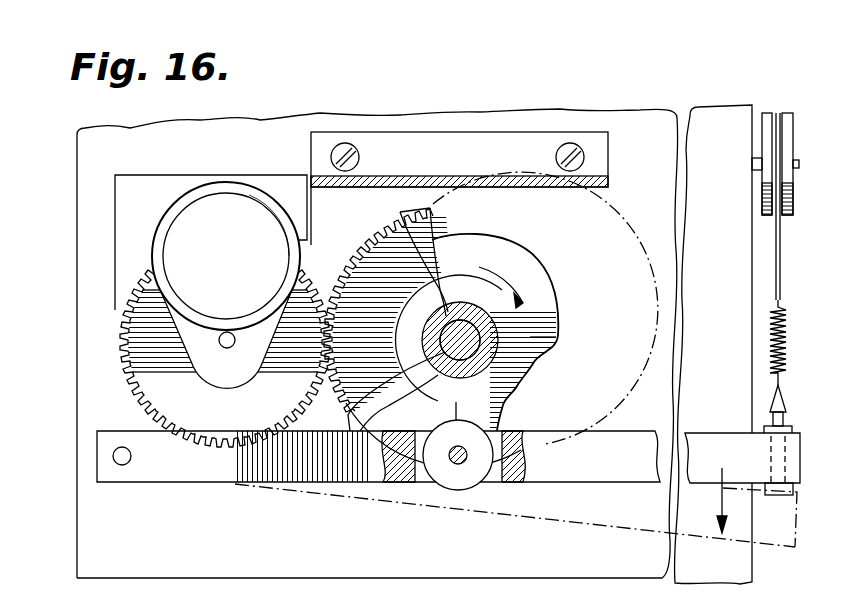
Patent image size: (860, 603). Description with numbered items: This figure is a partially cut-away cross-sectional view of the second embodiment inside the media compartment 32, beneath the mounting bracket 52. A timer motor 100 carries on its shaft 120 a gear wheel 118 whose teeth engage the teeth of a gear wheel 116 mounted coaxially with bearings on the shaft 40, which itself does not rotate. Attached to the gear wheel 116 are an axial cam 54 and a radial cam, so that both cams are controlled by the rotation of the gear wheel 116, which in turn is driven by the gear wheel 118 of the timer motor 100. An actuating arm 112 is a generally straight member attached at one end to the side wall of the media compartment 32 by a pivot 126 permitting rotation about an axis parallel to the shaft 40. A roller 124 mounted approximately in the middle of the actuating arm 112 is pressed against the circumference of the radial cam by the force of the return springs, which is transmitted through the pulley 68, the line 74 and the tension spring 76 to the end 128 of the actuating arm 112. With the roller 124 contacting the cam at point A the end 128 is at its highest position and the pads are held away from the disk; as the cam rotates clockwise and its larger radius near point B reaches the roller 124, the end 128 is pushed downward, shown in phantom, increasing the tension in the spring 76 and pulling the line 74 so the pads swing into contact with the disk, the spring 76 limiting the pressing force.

The media compartment 32 is at (78, 158).
The mounting bracket (52') 52 is at (506, 186).
The axial cam 54 is at (440, 297).
The gear wheel 116 is at (372, 250).
The shaft 40 is at (458, 336).
The timer motor 100 is at (226, 285).
The shaft of the timer motor 120 is at (222, 346).
The gear wheel 118 is at (224, 426).
The pivot 126 is at (113, 456).
The actuating arm 112 is at (583, 471).
The roller 124 is at (457, 490).
The pulley 68 is at (793, 197).
The line 74 is at (781, 246).
The tension spring 76 is at (790, 333).
The end of actuating arm 128 is at (795, 463).